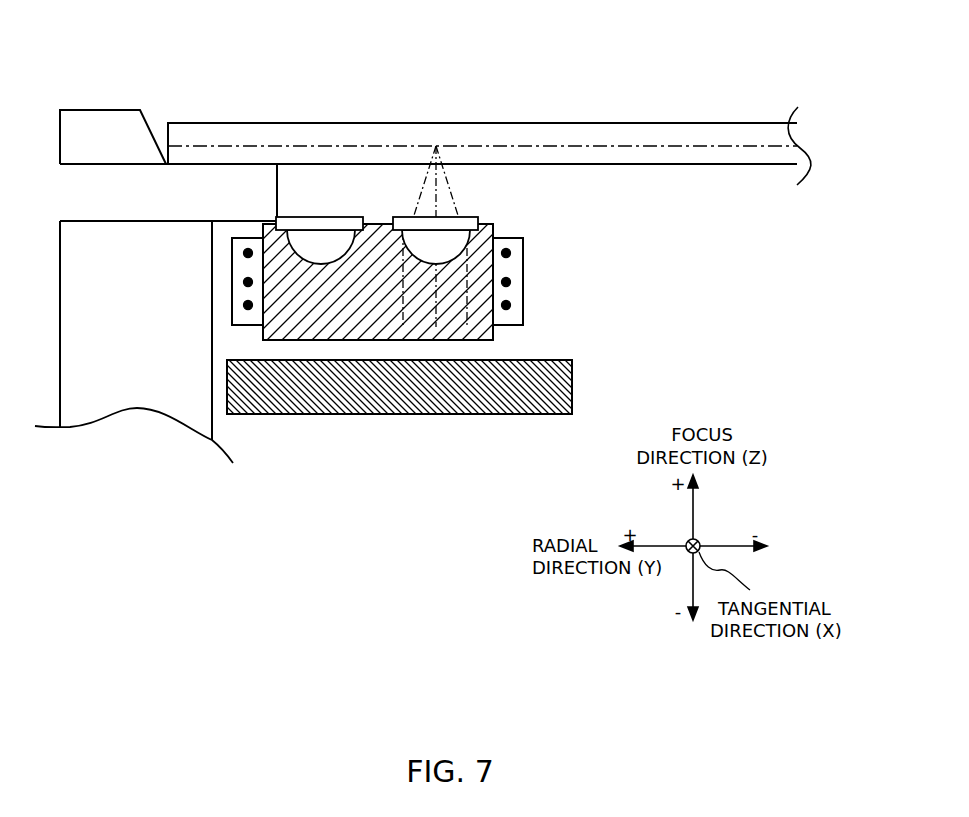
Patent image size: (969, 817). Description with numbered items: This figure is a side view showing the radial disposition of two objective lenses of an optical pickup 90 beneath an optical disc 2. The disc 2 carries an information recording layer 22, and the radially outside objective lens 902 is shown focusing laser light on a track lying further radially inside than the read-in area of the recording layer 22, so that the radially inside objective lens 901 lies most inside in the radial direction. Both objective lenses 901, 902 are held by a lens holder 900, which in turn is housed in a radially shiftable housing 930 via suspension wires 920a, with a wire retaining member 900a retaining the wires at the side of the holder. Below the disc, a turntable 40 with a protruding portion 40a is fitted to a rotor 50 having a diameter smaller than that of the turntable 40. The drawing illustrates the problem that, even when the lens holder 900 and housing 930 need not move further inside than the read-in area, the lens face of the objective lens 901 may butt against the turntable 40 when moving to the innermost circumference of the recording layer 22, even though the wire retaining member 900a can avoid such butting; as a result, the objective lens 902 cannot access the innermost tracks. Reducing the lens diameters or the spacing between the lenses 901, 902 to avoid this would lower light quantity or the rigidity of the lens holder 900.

The optical disc 2 is at (194, 123).
The information recording layer 22 is at (565, 148).
The turntable 40 is at (126, 207).
The protrusion of base 40a is at (100, 110).
The rotor 50 is at (114, 337).
The optical pickup 90 is at (446, 280).
The lens holder 900 is at (362, 308).
The wire retaining member 900a is at (523, 290).
The radially inside objective lens 901 is at (300, 257).
The radially outside objective lens 902 is at (415, 257).
The suspension wires 920a is at (506, 248).
The housing 930 is at (381, 401).